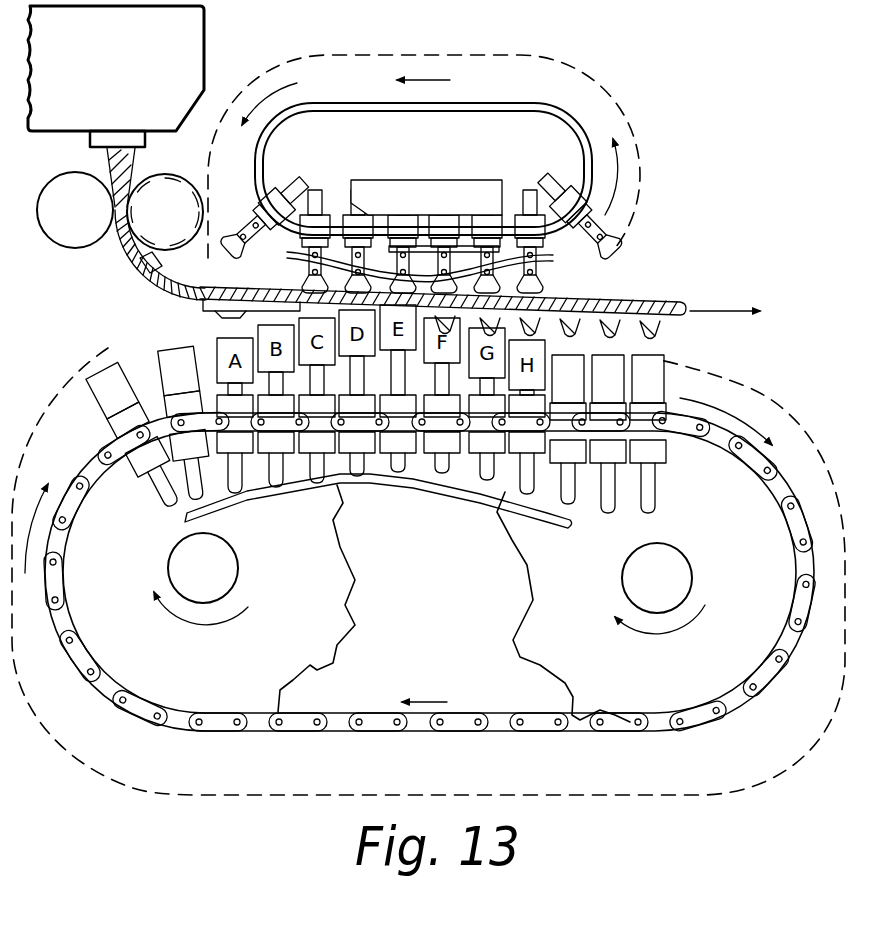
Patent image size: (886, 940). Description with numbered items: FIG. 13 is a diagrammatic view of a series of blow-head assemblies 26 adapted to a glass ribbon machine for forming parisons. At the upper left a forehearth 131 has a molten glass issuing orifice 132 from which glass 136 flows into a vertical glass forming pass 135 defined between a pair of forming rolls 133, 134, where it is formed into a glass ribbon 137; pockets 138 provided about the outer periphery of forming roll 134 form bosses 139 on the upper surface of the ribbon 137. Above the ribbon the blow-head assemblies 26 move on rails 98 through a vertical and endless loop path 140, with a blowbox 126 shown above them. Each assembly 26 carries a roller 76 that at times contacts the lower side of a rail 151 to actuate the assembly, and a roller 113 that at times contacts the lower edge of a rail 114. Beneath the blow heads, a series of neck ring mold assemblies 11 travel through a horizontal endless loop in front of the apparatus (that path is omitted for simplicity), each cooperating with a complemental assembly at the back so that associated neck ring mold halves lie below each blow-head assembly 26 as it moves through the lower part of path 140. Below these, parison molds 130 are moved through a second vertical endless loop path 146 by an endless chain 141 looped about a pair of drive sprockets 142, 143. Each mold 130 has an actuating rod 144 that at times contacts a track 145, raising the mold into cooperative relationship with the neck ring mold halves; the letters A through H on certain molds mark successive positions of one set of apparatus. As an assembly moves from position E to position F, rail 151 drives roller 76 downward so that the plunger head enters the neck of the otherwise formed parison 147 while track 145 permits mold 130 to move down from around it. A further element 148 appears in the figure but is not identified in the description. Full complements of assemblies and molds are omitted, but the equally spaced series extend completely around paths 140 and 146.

The neck ring mold assembly 11 is at (212, 310).
The blow-head assembly 26 is at (243, 219).
The roller 76 is at (333, 250).
The rail 98 is at (258, 154).
The roller 113 is at (262, 256).
The rail 114 is at (462, 247).
The blowbox 126 is at (410, 210).
The parison mold 130 is at (100, 352).
The forehearth 131 is at (80, 80).
The molten glass issuing orifice 132 is at (95, 150).
The forming roll 133 is at (60, 222).
The forming roll 134 is at (150, 224).
The vertical glass forming pass 135 is at (112, 240).
The glass 136 is at (137, 155).
The glass ribbon 137 is at (154, 280).
The pocket 138 is at (196, 250).
The boss 139 is at (443, 290).
The vertical endless loop path 140 is at (645, 182).
The endless chain 141 is at (68, 623).
The drive sprocket 142 is at (182, 677).
The drive sprocket 143 is at (640, 687).
The actuating rod 144 is at (195, 498).
The track 145 is at (262, 502).
The vertical endless loop path 146 is at (243, 795).
The parison 147 is at (660, 318).
The guide plate 148 is at (307, 315).
The rail 151 is at (548, 263).